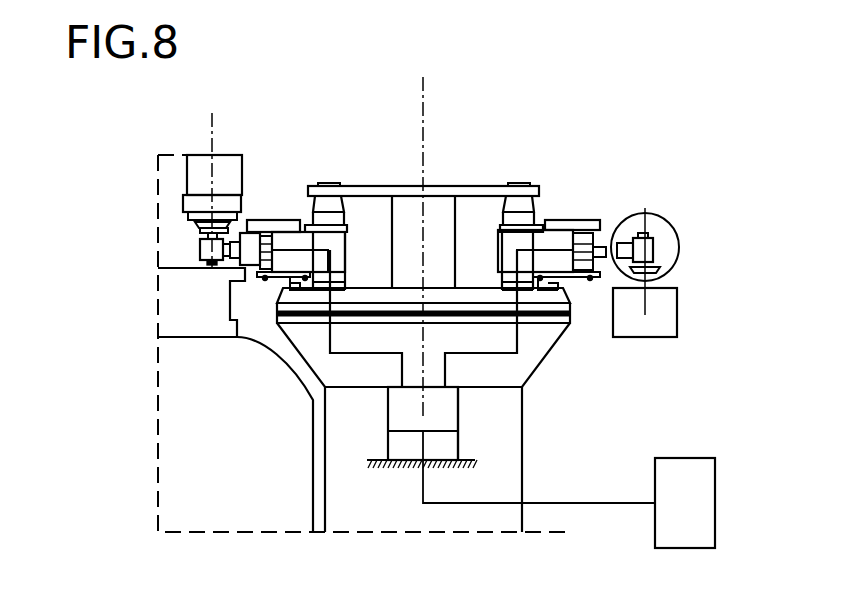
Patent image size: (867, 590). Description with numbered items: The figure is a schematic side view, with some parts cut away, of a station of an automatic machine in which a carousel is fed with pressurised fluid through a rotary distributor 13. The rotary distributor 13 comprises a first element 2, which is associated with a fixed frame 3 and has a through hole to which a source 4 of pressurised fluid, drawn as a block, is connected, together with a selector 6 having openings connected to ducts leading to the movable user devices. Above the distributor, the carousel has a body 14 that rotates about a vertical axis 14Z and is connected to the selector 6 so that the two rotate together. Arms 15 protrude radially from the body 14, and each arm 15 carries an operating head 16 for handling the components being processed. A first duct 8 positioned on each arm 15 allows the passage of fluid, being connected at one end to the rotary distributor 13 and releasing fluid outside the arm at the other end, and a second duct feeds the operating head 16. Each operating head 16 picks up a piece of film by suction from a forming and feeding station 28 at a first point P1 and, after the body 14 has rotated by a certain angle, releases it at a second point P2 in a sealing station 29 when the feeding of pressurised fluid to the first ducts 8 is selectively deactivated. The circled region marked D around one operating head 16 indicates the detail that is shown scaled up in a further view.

The first element 2 is at (400, 443).
The fixed frame 3 is at (372, 467).
The source 4 is at (692, 513).
The selector 6 is at (443, 405).
The first duct 8 is at (327, 338).
The rotary distributor 13 is at (462, 428).
The body 14 is at (438, 207).
The axis 14Z is at (423, 108).
The arm 15 is at (600, 242).
The operating head 16 is at (656, 273).
The forming and feeding station 28 is at (690, 321).
The sealing station 29 is at (179, 182).
The first point P1 is at (667, 213).
The second point P2 is at (212, 130).
The detail D is at (680, 227).